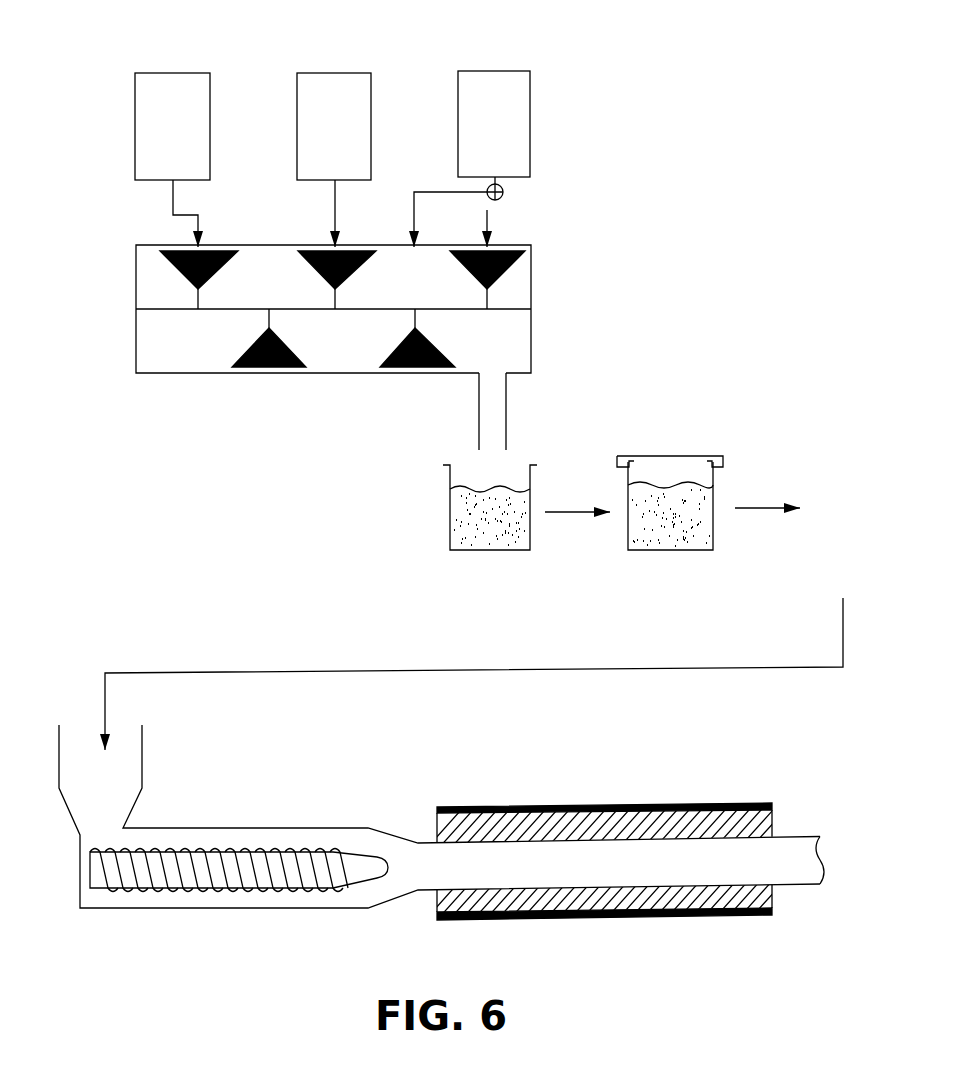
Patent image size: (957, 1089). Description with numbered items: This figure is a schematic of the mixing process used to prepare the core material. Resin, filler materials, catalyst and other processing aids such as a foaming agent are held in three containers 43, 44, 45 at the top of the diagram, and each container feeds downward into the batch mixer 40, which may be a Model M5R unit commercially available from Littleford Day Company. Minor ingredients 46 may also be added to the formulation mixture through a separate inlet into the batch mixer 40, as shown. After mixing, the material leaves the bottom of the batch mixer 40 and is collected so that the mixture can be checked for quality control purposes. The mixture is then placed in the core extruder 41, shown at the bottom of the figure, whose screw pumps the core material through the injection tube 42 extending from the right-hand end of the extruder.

The batch mixer 40 is at (168, 375).
The core extruder 41 is at (168, 827).
The injection tube 42 is at (797, 835).
The container 43 is at (185, 72).
The container 44 is at (310, 72).
The container 45 is at (515, 68).
The minor ingredients 46 is at (487, 210).